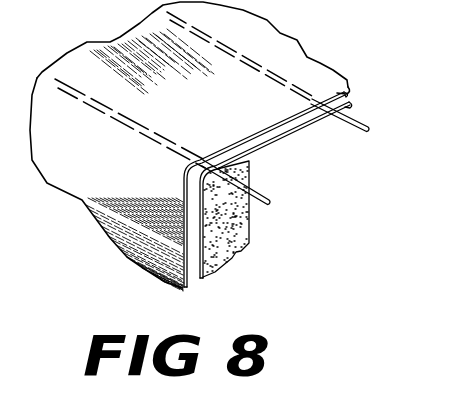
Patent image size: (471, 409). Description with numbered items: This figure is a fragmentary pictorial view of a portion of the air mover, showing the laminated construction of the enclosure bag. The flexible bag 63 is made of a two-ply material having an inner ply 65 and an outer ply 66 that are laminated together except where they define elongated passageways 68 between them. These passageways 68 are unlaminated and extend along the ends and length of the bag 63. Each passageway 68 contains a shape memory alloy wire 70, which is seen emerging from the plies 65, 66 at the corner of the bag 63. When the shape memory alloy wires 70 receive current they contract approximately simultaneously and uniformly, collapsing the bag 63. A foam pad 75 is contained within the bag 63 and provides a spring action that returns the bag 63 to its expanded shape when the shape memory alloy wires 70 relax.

The flexible bag 63 is at (118, 41).
The inner ply 65 is at (352, 107).
The outer ply 66 is at (342, 85).
The elongated passageway 68 is at (319, 117).
The shape memory alloy wire 70 is at (373, 128).
The foam pad 75 is at (227, 245).